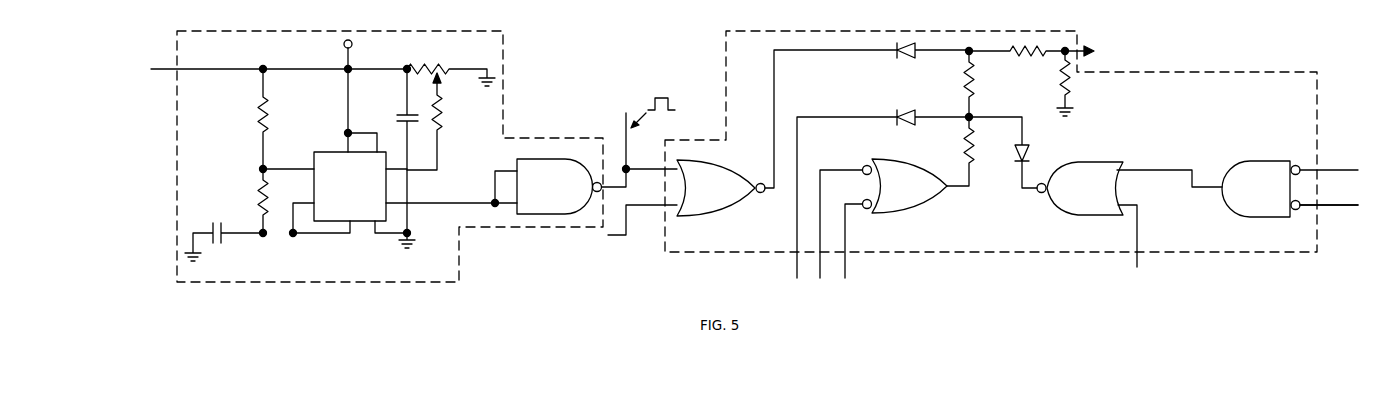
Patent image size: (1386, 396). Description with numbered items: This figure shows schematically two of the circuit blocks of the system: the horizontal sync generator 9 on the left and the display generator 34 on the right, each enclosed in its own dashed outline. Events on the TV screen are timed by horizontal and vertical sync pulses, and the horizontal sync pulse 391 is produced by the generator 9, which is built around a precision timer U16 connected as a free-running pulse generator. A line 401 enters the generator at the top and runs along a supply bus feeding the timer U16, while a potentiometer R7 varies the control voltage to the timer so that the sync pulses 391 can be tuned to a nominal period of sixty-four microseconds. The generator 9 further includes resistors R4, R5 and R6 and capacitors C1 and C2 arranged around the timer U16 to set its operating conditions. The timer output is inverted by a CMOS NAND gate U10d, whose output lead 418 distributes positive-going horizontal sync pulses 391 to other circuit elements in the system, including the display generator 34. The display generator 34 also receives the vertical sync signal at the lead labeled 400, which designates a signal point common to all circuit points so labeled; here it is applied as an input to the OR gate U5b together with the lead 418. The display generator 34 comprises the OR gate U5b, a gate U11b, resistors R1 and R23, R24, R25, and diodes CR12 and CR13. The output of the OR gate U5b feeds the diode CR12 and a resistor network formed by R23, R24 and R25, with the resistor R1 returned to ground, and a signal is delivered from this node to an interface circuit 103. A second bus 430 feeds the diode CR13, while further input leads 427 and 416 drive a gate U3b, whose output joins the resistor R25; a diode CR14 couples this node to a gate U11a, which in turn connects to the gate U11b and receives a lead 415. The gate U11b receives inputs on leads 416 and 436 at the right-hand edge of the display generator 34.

The horizontal sync generator 9 is at (506, 60).
The display generator 34 is at (910, 252).
The input line 401 is at (173, 68).
The resistor R5 is at (258, 110).
The resistor R4 is at (260, 194).
The capacitor C1 is at (217, 223).
The 555 precision timer U16 is at (331, 154).
The capacitor C2 is at (401, 113).
The potentiometer R7 is at (434, 61).
The resistor R6 is at (442, 121).
The CMOS NAND gate U10d is at (559, 186).
The timer output line 418 is at (626, 141).
The horizontal sync pulse 391 is at (668, 97).
The conductor 400 is at (629, 238).
The OR gate U5b is at (721, 188).
The diode CR12 is at (908, 60).
The resistor R23 is at (1031, 55).
The interface circuit 103 is at (1133, 42).
The resistor R1 is at (1075, 98).
The input line 430 is at (796, 265).
The diode CR13 is at (905, 125).
The resistor R24 is at (977, 88).
The resistor R25 is at (978, 156).
The diode CR14 is at (1033, 151).
The NAND gate U3b is at (905, 186).
The input line 427 is at (820, 273).
The signal line 416 is at (845, 268).
The NOR gate U11a is at (1080, 188).
The input line 415 is at (1140, 270).
The gate U11b is at (1261, 189).
The input line 436 is at (1332, 206).